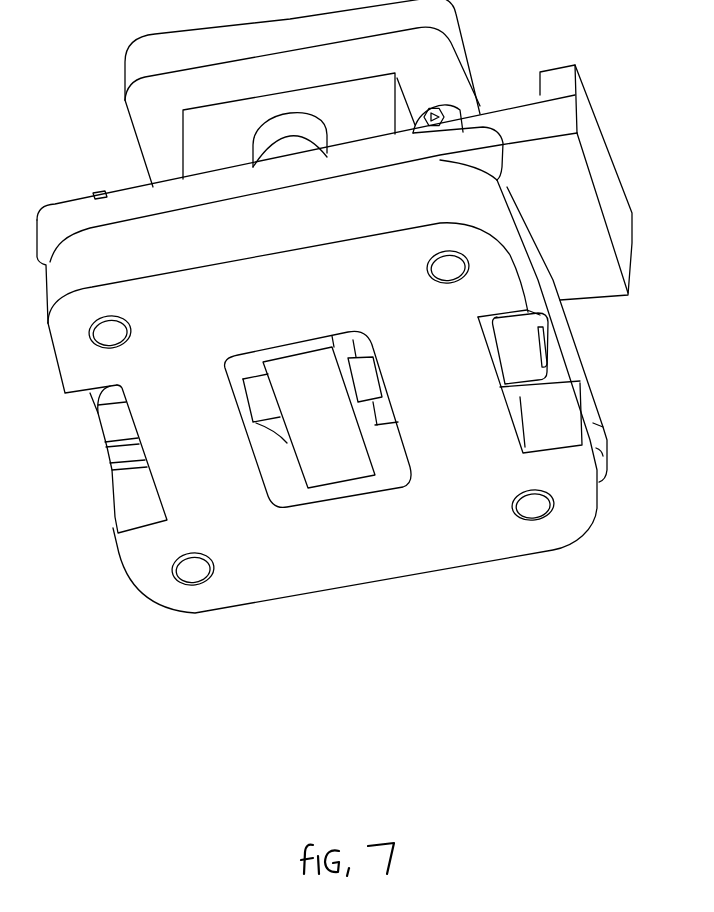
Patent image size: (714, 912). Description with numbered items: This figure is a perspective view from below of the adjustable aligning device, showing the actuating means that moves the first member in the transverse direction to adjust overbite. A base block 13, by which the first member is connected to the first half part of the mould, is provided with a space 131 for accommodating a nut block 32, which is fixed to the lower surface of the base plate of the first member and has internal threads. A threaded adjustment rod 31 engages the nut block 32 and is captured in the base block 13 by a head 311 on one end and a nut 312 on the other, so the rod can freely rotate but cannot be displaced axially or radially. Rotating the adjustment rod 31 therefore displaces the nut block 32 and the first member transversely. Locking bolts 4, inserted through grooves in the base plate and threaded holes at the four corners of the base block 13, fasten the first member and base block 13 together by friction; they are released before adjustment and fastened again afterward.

The base block 13 is at (485, 527).
The locking bolt 4 is at (535, 500).
The nut 312 is at (118, 420).
The threaded adjustment rod 31 is at (258, 428).
The nut block 32 is at (338, 450).
The space 131 is at (273, 457).
The head 311 is at (517, 358).